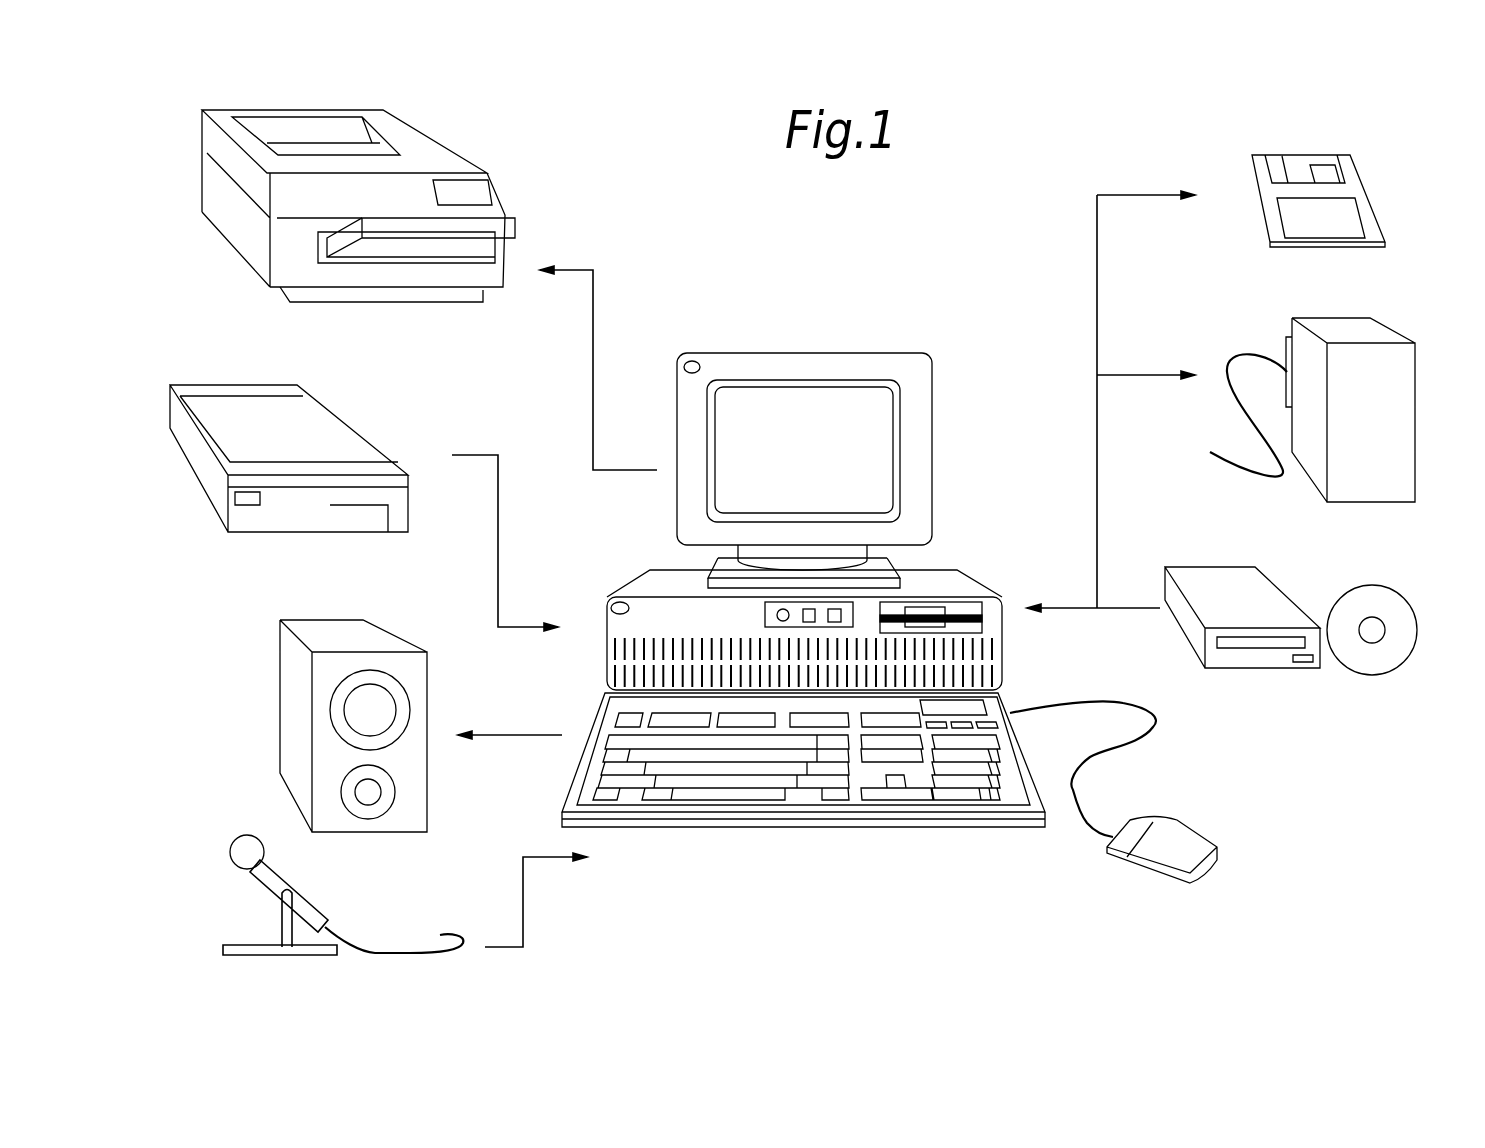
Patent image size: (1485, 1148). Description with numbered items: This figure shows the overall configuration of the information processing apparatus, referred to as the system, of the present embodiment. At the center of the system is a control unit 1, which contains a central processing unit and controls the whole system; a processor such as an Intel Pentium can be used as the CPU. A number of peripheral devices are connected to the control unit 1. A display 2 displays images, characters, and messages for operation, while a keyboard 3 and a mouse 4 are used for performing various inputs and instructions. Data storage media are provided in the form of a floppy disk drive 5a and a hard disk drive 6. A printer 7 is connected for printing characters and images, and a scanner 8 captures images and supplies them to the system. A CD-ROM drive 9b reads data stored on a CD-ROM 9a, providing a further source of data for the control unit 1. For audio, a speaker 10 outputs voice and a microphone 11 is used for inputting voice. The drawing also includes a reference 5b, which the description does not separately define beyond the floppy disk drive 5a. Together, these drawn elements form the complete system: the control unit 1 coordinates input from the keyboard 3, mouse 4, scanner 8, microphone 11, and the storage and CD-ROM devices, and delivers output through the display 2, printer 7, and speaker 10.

The control unit 1 is at (603, 628).
The display 2 is at (670, 437).
The keyboard 3 is at (597, 722).
The mouse 4 is at (1153, 853).
The floppy disk drive 5a is at (1352, 215).
The floppy disk drive 5b is at (962, 608).
The hard disk drive 6 is at (1370, 332).
The printer 7 is at (452, 160).
The scanner 8 is at (330, 433).
The CD-ROM 9a is at (1397, 603).
The CD-ROM drive 9b is at (1225, 585).
The speaker 10 is at (355, 633).
The microphone 11 is at (308, 903).